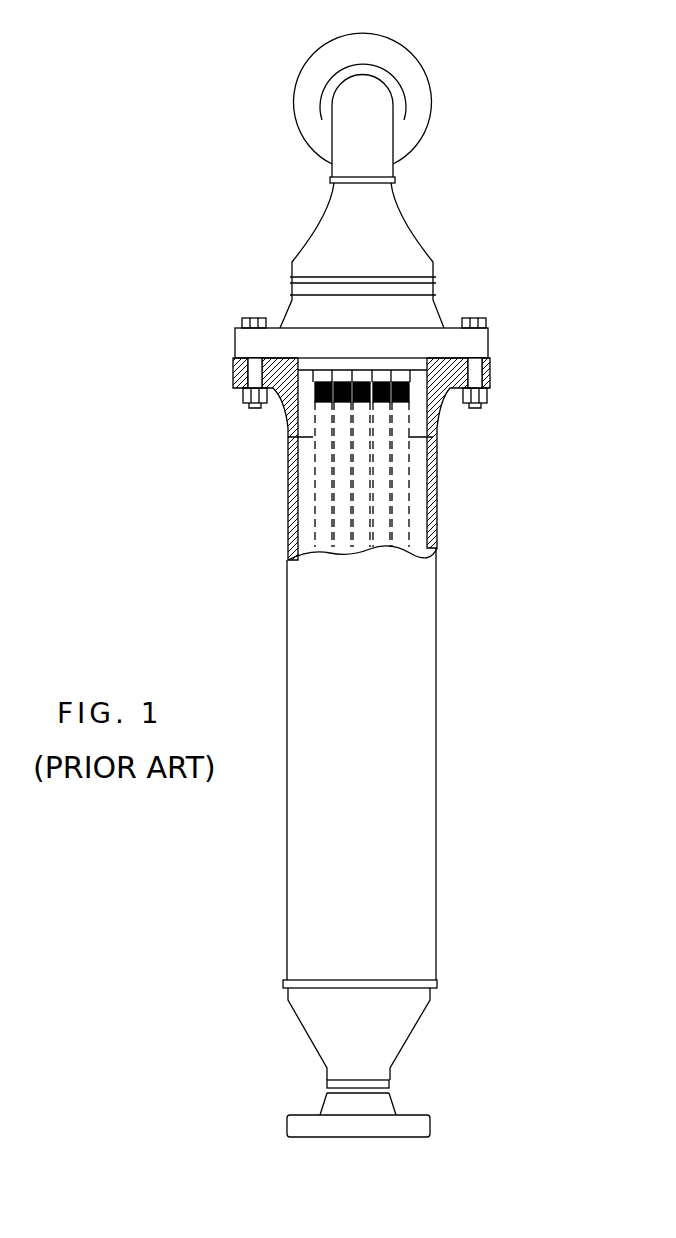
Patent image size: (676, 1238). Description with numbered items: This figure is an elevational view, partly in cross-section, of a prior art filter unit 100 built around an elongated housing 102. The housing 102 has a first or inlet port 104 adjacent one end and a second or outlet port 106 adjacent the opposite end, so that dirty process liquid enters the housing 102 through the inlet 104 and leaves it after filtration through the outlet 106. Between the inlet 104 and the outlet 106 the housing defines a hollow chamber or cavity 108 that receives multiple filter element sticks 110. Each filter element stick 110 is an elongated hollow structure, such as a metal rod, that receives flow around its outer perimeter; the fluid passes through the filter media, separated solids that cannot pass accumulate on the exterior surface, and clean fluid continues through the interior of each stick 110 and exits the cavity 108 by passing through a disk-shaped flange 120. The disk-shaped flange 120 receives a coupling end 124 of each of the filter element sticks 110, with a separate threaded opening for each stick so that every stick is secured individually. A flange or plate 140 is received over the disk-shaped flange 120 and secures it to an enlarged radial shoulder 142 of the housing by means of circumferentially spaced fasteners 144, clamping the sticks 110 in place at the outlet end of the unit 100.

The filter unit 100 is at (176, 418).
The housing 102 is at (415, 748).
The inlet port 104 is at (378, 1133).
The outlet port 106 is at (393, 108).
The hollow chamber 108 is at (422, 526).
The filter element sticks 110 is at (340, 505).
The disk-shaped flange 120 is at (233, 358).
The coupling end 124 is at (320, 377).
The flange or plate 140 is at (488, 340).
The enlarged radial shoulder 142 is at (490, 377).
The fasteners 144 is at (473, 318).